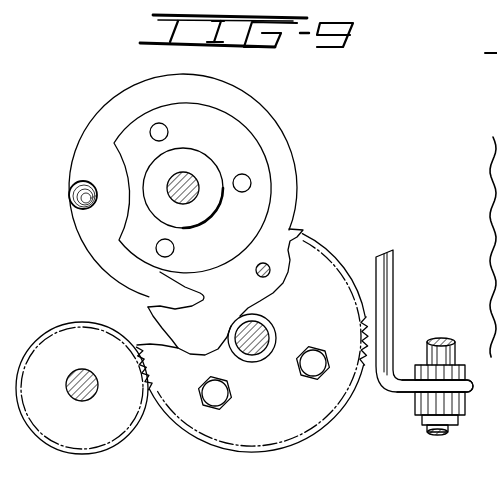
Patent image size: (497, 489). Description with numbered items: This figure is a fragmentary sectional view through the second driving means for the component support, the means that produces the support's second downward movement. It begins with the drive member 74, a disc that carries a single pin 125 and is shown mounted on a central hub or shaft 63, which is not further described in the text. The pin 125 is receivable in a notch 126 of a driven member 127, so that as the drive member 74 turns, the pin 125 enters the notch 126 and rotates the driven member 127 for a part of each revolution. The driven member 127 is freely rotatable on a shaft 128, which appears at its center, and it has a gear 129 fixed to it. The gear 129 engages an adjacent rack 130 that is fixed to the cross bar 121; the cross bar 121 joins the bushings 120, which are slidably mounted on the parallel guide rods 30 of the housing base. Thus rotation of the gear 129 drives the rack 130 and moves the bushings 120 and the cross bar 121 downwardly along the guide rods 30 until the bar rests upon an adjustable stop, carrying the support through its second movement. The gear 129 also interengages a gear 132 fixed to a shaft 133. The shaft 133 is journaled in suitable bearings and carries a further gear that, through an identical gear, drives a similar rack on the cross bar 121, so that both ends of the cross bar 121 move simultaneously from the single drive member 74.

The drive member 74 is at (268, 132).
The drive shaft 63 is at (188, 177).
The single pin 125 is at (70, 194).
The driven member 127 is at (290, 238).
The notch 126 is at (181, 296).
The shaft 128 is at (258, 352).
The gear 129 is at (331, 421).
The rack 130 is at (378, 256).
The cross bar 121 is at (415, 385).
The bushings 120 is at (465, 411).
The guide rods 30 is at (432, 430).
The gear 132 is at (116, 430).
The shaft 133 is at (85, 395).